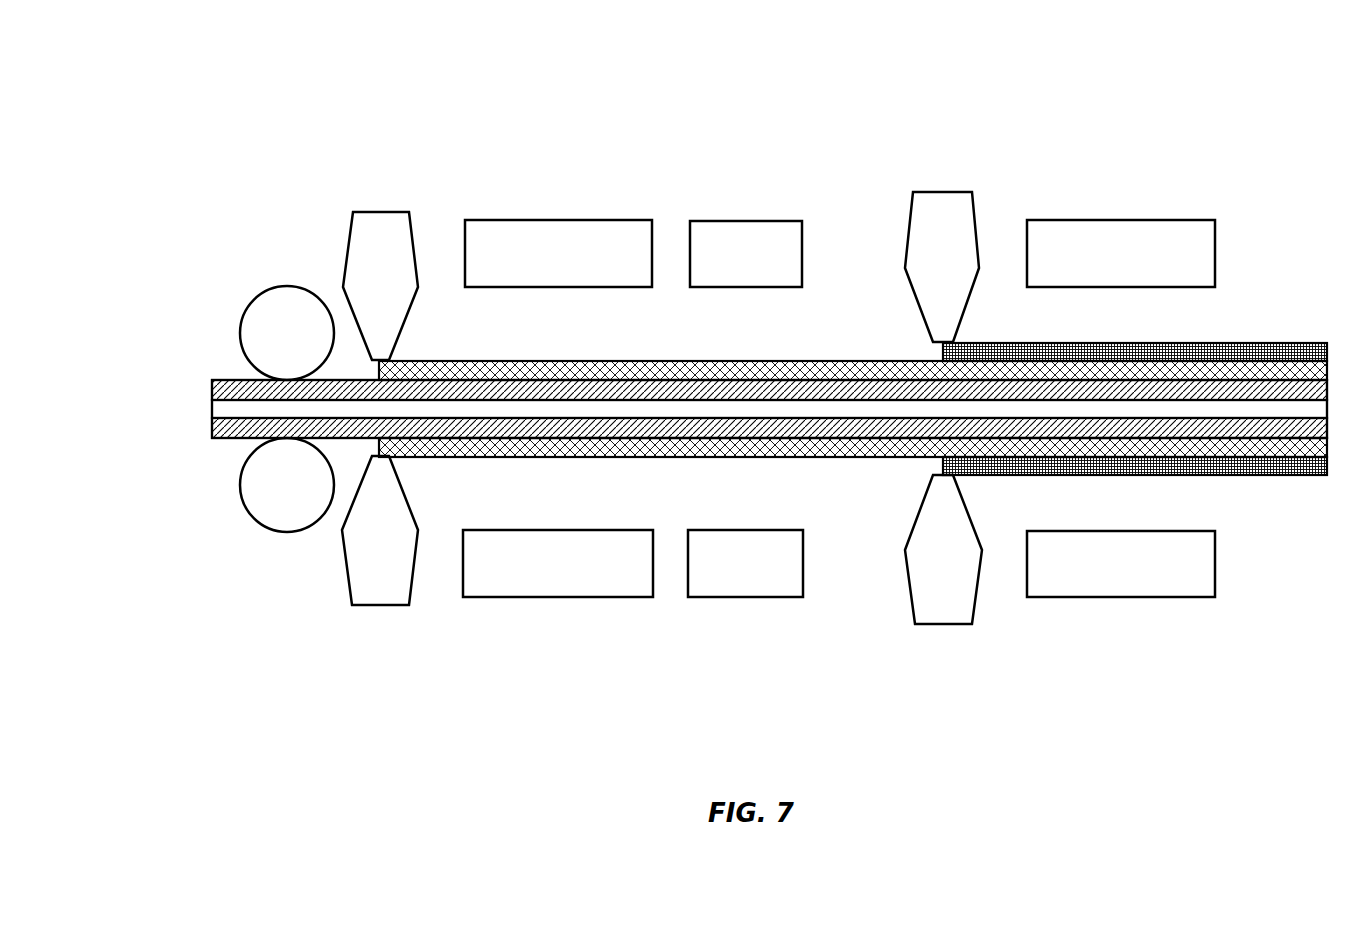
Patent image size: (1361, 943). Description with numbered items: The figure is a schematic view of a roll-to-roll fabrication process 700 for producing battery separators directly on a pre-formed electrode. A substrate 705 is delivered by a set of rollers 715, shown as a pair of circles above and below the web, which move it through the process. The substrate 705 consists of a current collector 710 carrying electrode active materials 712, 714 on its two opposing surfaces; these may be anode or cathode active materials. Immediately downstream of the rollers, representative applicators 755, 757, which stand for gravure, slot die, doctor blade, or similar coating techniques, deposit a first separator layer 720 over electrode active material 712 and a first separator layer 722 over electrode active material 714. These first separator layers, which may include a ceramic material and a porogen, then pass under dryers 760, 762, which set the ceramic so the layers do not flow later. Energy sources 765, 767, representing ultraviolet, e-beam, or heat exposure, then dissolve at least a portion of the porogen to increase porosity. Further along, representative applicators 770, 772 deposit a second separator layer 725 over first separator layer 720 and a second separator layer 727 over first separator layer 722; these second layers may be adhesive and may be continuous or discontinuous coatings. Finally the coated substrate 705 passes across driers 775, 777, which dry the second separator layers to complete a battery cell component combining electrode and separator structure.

The fabrication process 700 is at (290, 108).
The substrate 705 is at (230, 380).
The current collector 710 is at (212, 407).
The electrode active material 712 is at (212, 390).
The electrode active material 714 is at (240, 438).
The rollers 715 is at (277, 288).
The first separator layer 720 is at (468, 360).
The first separator layer 722 is at (542, 456).
The second separator layer 725 is at (1262, 343).
The second separator layer 727 is at (1250, 477).
The applicator 755 is at (385, 212).
The applicator 757 is at (382, 605).
The dryer 760 is at (548, 220).
The dryer 762 is at (540, 597).
The energy source 765 is at (735, 221).
The energy source 767 is at (737, 597).
The applicator 770 is at (943, 192).
The applicator 772 is at (945, 624).
The drier 775 is at (1142, 220).
The drier 777 is at (1142, 597).